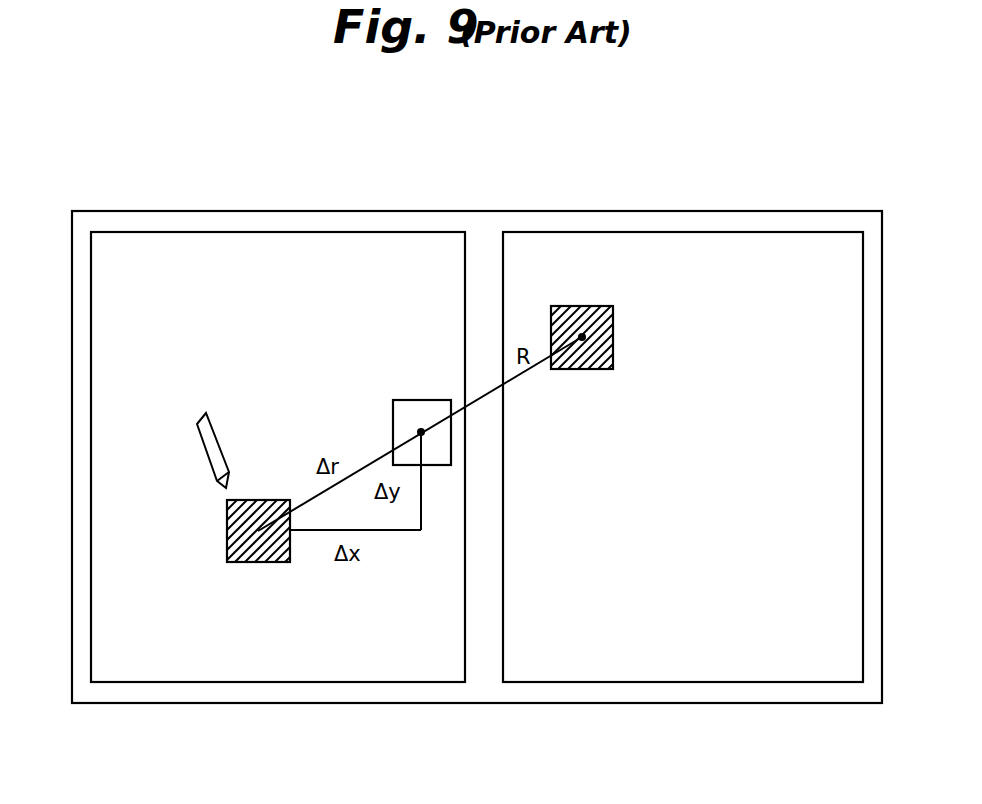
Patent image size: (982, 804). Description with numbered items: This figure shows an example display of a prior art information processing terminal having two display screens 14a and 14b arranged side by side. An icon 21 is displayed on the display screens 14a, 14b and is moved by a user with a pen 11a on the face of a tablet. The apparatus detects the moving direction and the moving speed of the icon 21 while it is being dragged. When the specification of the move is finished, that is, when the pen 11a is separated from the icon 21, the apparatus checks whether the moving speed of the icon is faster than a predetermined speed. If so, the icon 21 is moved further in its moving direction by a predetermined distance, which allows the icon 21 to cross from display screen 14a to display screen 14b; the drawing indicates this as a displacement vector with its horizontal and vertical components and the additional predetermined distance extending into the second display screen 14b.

The display screen 14a is at (318, 232).
The display screen 14b is at (677, 232).
The pen 11a is at (217, 439).
The icon 21 is at (252, 563).